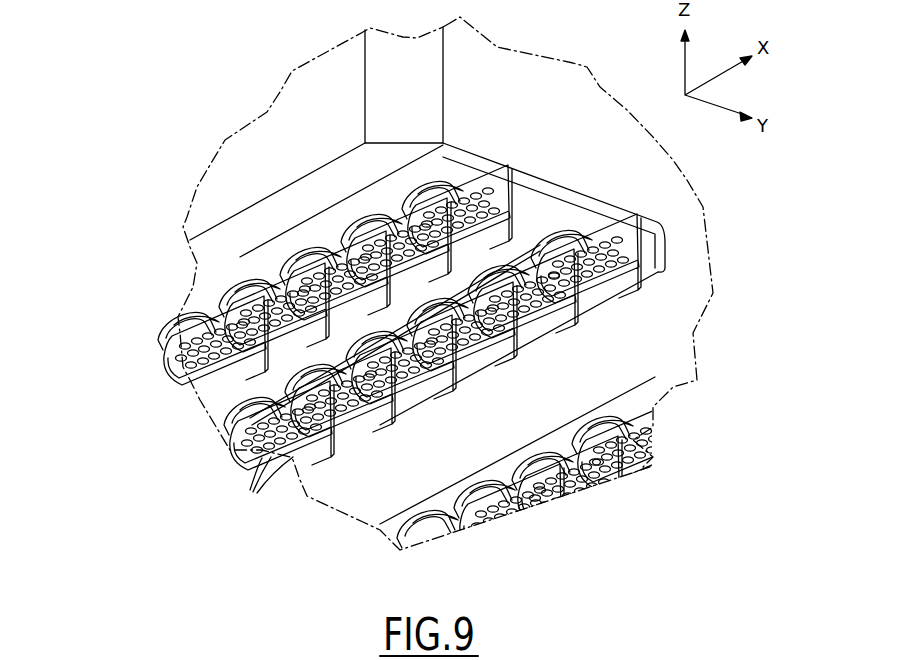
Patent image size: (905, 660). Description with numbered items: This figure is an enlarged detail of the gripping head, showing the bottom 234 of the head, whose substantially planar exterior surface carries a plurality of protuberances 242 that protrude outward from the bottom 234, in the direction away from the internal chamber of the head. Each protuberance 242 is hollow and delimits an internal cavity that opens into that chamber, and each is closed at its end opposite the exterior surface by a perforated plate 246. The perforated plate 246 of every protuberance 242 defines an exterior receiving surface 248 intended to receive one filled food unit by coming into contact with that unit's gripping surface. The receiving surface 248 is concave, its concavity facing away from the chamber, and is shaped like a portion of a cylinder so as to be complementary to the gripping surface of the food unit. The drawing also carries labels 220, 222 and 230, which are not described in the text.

The connector assembly 220 is at (253, 188).
The support plate 222 is at (470, 178).
The circuit board 230 is at (438, 85).
The bottom 234 is at (343, 506).
The protuberance 242 is at (400, 232).
The perforated plate 246 is at (375, 215).
The receiving surface 248 is at (250, 492).